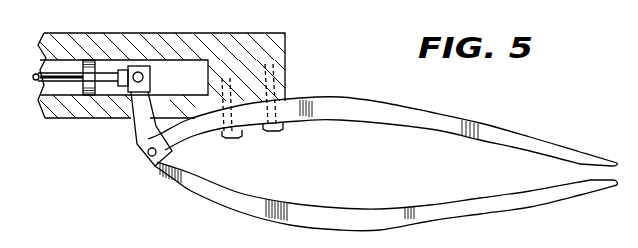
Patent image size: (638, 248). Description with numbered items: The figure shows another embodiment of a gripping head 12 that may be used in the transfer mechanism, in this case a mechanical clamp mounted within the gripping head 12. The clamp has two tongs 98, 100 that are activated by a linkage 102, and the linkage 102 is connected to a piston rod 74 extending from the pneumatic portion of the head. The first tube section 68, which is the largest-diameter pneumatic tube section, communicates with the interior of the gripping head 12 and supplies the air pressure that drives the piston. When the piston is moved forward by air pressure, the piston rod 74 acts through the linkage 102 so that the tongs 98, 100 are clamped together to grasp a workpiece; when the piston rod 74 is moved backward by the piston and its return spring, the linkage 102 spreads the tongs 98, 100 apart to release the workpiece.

The gripping head 12 is at (344, 46).
The first tube section 68 is at (187, 66).
The piston rod 74 is at (65, 76).
The linkage 102 is at (131, 133).
The tong 98 is at (517, 133).
The tong 100 is at (517, 203).